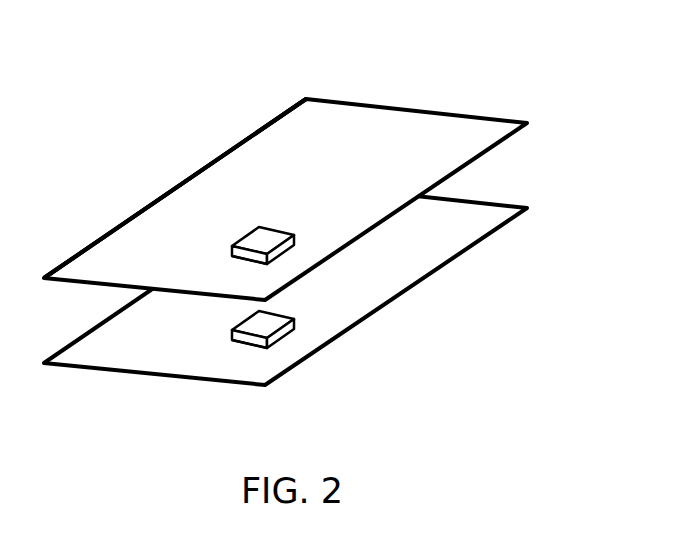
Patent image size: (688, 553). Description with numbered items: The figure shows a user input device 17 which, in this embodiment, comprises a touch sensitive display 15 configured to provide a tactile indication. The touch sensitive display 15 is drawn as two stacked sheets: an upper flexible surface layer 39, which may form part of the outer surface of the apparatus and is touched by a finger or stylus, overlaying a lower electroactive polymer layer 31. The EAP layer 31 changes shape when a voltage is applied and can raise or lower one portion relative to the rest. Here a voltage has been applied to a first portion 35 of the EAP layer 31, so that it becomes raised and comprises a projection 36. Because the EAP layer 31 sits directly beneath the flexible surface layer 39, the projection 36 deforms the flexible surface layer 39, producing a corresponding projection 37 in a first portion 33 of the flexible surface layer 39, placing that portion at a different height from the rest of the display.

The touch sensitive display 15 is at (145, 188).
The user input device 17 is at (235, 128).
The electroactive polymer layer 31 is at (427, 243).
The first portion of the flexible surface layer 33 is at (278, 253).
The first portion of the EAP layer 35 is at (288, 338).
The projection 36 is at (250, 343).
The corresponding projection 37 is at (247, 262).
The flexible surface layer 39 is at (467, 140).